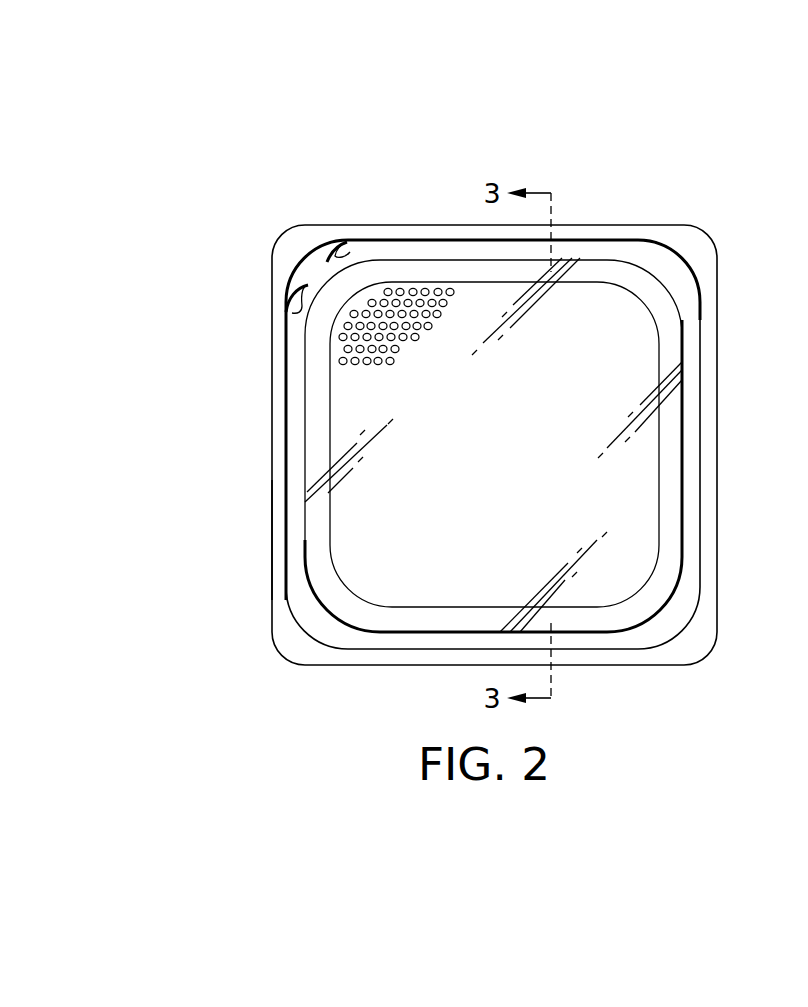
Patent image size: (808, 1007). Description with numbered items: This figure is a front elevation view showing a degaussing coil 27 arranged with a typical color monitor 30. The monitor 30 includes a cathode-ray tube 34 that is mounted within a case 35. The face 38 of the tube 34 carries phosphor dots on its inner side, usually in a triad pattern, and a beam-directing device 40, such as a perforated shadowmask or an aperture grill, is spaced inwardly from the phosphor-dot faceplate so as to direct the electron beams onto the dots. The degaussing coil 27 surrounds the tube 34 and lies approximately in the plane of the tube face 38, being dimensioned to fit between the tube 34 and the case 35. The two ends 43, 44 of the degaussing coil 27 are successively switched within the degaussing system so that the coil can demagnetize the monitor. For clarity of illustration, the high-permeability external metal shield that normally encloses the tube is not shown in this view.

The color monitor 30 is at (308, 183).
The degaussing coil 27 is at (286, 417).
The cathode-ray tube 34 is at (696, 590).
The case 35 is at (272, 548).
The tube face 38 is at (355, 490).
The beam-directing device 40 is at (332, 348).
The end of the degaussing coil 43 is at (338, 256).
The end of the degaussing coil 44 is at (292, 313).